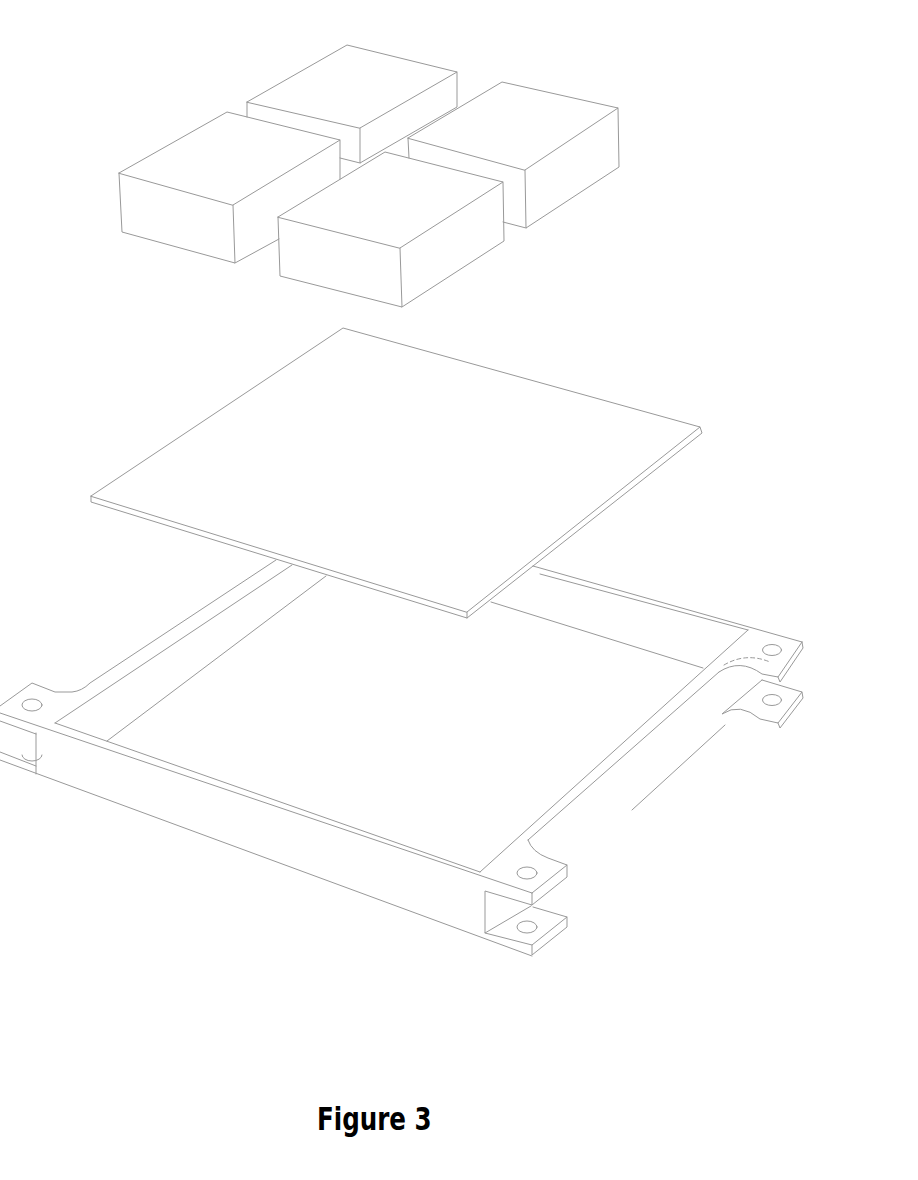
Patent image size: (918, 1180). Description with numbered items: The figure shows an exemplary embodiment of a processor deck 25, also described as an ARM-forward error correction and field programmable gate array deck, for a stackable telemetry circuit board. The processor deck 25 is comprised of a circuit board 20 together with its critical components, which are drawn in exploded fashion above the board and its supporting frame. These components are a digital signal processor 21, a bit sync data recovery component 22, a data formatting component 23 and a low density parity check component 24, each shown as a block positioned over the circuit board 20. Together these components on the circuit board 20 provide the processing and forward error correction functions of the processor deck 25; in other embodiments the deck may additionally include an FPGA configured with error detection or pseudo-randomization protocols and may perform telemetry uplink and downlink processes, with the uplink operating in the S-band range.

The circuit board 20 is at (616, 428).
The digital signal processor 21 is at (387, 68).
The bit sync data recovery component 22 is at (542, 112).
The data formatting component 23 is at (312, 270).
The low density parity check 24 is at (195, 163).
The processor deck 25 is at (670, 640).